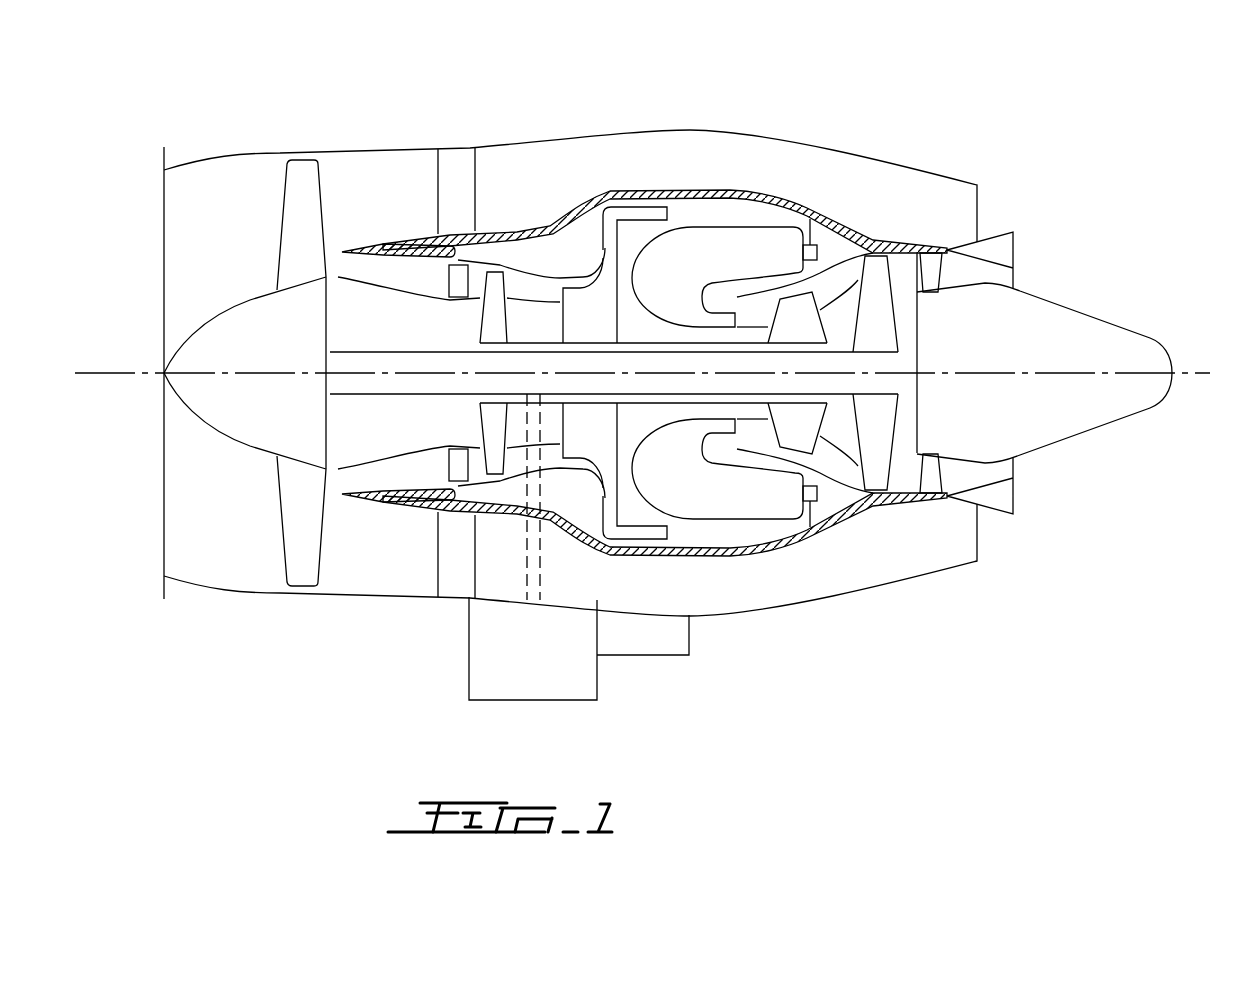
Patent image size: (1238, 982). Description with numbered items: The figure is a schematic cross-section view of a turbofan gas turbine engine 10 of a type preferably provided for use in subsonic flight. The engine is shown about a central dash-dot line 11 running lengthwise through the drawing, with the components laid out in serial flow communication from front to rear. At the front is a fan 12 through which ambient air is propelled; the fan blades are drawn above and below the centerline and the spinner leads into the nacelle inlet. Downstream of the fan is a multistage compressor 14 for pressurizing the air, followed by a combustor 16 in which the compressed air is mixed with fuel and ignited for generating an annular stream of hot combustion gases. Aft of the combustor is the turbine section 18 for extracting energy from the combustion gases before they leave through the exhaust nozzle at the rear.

The turbofan gas turbine engine 10 is at (813, 128).
The central longitudinal axis 11 is at (1205, 365).
The fan 12 is at (307, 508).
The multistage compressor 14 is at (523, 283).
The combustor 16 is at (720, 247).
The turbine section 18 is at (830, 430).